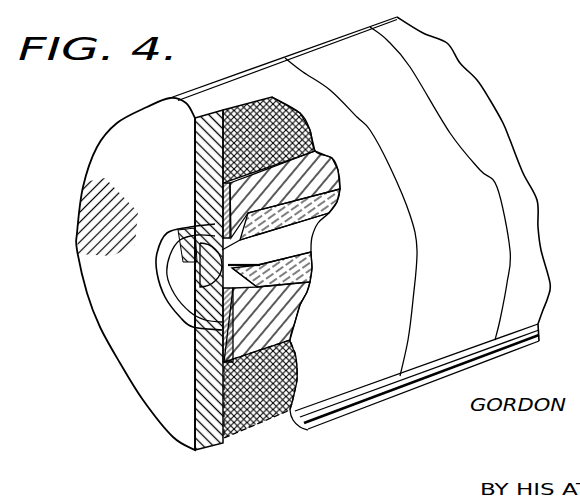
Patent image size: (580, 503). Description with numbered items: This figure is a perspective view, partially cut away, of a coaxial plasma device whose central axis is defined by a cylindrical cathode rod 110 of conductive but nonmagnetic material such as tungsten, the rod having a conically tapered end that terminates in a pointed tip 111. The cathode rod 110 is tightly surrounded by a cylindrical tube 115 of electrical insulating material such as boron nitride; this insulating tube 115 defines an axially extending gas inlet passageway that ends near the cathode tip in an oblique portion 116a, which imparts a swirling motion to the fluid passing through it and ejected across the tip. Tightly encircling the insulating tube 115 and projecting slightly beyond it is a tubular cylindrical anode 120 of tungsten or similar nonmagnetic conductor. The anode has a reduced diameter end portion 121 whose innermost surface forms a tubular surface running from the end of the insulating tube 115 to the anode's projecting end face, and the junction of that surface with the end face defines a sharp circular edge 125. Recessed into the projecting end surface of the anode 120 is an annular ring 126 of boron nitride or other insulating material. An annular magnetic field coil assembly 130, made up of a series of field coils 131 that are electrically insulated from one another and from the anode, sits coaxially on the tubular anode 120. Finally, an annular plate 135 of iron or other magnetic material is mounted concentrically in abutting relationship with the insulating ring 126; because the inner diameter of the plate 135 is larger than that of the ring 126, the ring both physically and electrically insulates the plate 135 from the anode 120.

The annular plate 135 is at (150, 177).
The field coils 131 is at (280, 142).
The cylindrical tube 115 is at (327, 200).
The cylindrical cathode rod 110 is at (307, 246).
The pointed tip 111 is at (245, 262).
The sharp circular edge 125 is at (179, 278).
The annular ring 126 is at (185, 280).
The reduced diameter end portion 121 is at (256, 291).
The oblique portion 116a is at (247, 301).
The tubular cylindrical anode 120 is at (270, 326).
The annular magnetic field coil assembly 130 is at (281, 426).